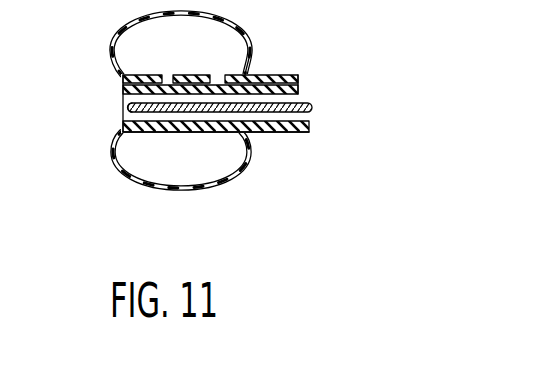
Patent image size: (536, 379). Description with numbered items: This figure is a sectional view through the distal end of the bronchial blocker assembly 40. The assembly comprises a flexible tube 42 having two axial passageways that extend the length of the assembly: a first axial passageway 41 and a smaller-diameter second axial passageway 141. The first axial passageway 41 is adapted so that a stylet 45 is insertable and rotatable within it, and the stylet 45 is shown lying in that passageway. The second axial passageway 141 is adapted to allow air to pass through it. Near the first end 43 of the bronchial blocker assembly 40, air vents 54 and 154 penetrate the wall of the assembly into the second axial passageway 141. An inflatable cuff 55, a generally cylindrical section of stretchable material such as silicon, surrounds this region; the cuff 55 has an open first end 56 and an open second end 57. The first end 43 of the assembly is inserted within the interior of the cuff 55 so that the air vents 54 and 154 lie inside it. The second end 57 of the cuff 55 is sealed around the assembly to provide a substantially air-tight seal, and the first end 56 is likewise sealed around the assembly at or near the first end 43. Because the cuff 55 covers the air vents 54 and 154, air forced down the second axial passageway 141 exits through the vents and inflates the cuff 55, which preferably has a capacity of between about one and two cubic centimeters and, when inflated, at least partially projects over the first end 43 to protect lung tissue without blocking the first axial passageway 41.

The bronchial blocker assembly 40 is at (218, 120).
The first axial passageway 41 is at (313, 123).
The flexible tube 42 is at (295, 133).
The first end 43 is at (122, 114).
The stylet 45 is at (313, 107).
The air vent 54 is at (177, 77).
The inflatable cuff 55 is at (167, 189).
The first end of cuff 56 is at (115, 66).
The second end of cuff 57 is at (245, 68).
The second axial passageway 141 is at (300, 87).
The air vent 154 is at (215, 75).